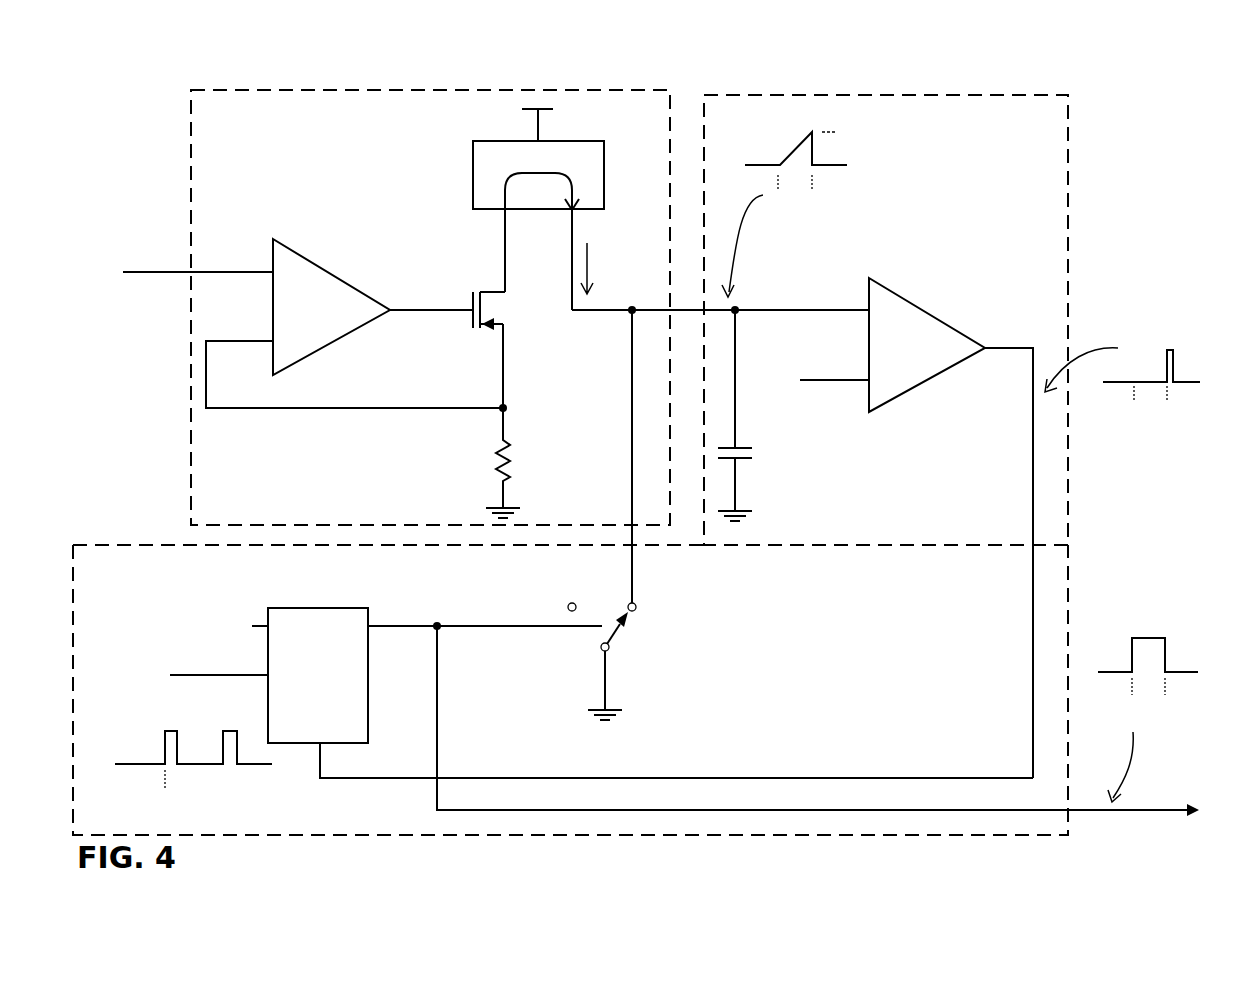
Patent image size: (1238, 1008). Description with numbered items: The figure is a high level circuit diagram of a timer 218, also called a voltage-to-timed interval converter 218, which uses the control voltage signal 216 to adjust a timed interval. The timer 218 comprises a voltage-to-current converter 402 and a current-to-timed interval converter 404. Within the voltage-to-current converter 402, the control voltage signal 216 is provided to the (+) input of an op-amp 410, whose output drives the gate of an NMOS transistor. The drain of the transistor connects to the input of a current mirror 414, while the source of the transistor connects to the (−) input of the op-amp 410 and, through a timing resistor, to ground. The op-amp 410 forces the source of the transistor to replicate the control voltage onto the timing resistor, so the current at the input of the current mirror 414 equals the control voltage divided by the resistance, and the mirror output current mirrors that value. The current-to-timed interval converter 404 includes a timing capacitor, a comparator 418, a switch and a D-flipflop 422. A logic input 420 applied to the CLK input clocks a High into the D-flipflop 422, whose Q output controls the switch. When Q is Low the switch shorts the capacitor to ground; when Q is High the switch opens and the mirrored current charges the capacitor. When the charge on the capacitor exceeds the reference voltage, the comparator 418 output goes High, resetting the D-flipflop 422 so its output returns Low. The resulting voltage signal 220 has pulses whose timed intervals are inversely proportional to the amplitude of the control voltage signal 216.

The timer 218 is at (565, 423).
The Vcontrol signal 216 is at (142, 272).
The voltage-to-current converter 402 is at (570, 90).
The current-to-timed interval converter 404 is at (1025, 96).
The op-amp 410 is at (324, 264).
The current mirror 414 is at (590, 130).
The comparator 418 is at (929, 310).
The logic input 420 is at (188, 671).
The D-flipflop 422 is at (310, 608).
The voltage signal 220 is at (1178, 812).